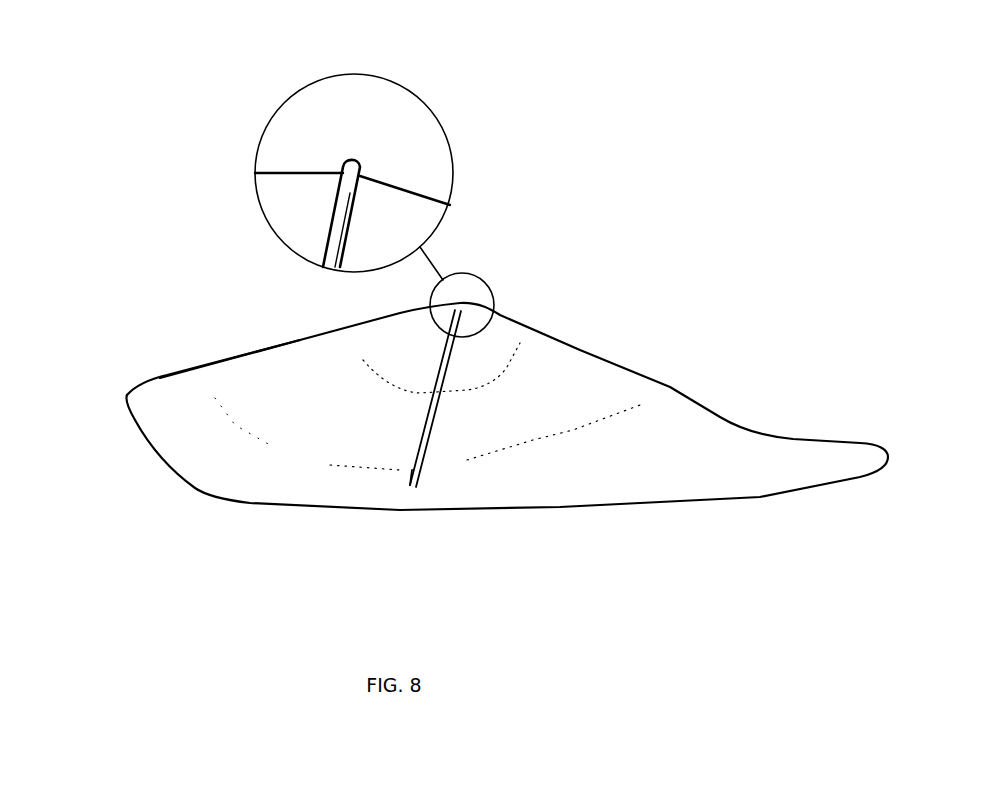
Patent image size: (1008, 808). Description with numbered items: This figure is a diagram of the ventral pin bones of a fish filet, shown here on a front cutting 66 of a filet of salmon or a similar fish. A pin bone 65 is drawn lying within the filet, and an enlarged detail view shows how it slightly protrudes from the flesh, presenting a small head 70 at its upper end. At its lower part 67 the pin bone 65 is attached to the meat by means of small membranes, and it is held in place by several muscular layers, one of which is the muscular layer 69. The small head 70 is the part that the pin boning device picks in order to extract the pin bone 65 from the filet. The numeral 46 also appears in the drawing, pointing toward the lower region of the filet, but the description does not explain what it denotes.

The sole 46 is at (720, 433).
The pin bone 65 is at (455, 347).
The front cutting 66 is at (215, 398).
The lower part 67 is at (418, 473).
The muscular layer 69 is at (357, 352).
The small head 70 is at (372, 157).